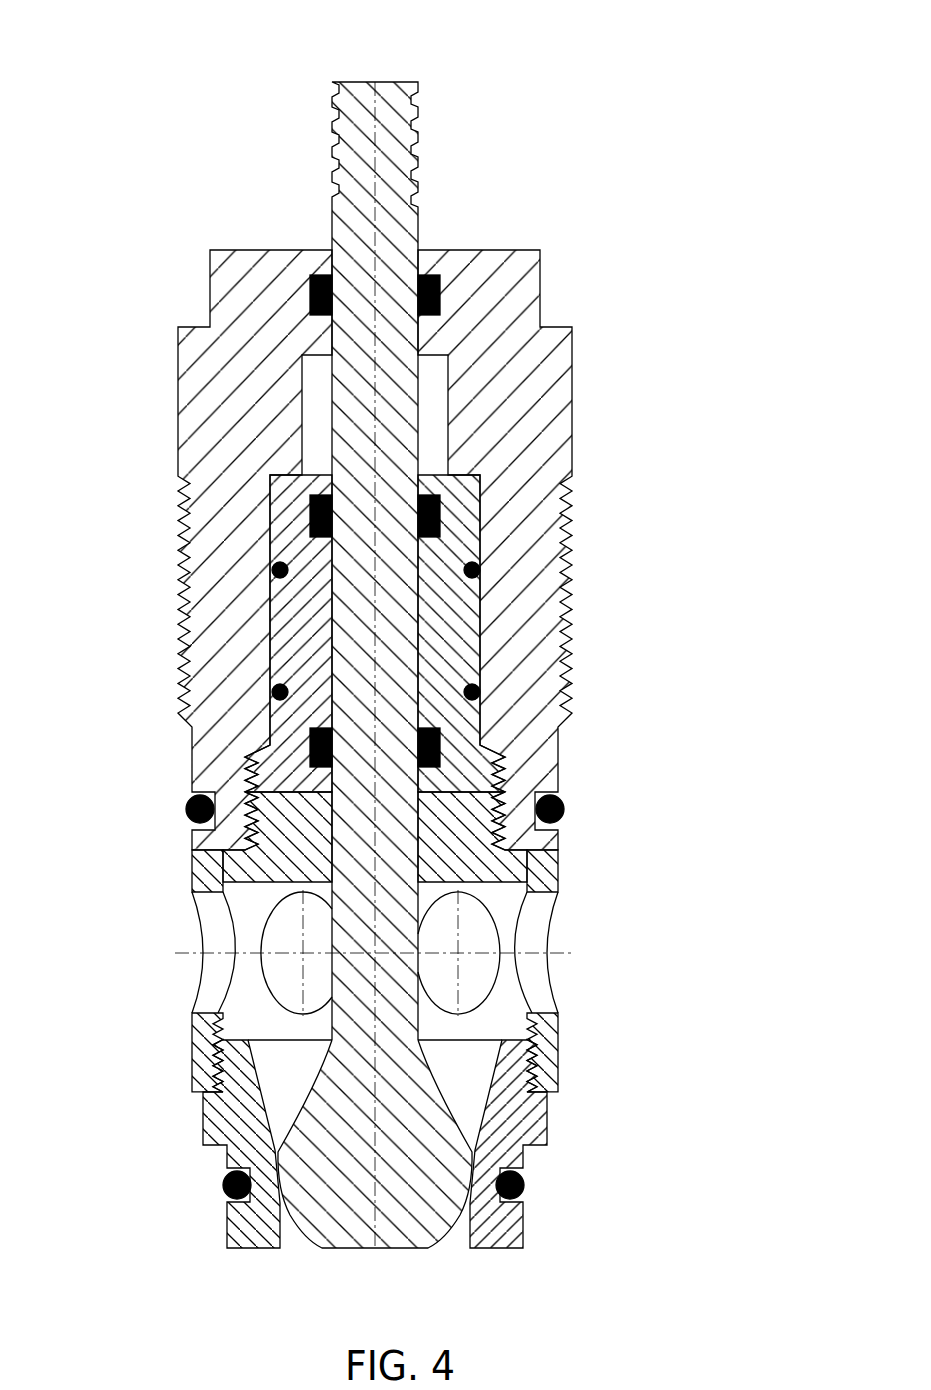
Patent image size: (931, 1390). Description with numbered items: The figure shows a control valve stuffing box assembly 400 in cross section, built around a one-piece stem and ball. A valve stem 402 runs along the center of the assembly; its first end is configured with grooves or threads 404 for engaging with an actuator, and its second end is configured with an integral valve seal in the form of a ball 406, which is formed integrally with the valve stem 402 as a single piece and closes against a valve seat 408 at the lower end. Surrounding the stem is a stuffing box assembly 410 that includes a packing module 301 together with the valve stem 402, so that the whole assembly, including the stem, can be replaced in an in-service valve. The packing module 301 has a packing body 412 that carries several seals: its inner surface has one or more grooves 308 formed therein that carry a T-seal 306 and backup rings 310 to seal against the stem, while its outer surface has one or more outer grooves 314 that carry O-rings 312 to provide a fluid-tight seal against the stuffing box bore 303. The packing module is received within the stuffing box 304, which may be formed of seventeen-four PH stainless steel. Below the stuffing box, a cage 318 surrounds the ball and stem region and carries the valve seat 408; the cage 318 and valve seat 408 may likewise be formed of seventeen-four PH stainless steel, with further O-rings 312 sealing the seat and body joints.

The stuffing box assembly 400 is at (411, 633).
The valve stem 402 is at (477, 556).
The grooves or threads 404 is at (328, 136).
The ball 406 is at (340, 1152).
The valve seat 408 is at (552, 1120).
The stuffing box assembly 410 is at (411, 535).
The packing body 412 is at (276, 612).
The packing module 301 is at (422, 633).
The stuffing box bore 303 is at (285, 518).
The stuffing box 304 is at (580, 360).
The T-seal 306 is at (447, 748).
The grooves 308 is at (429, 490).
The backup rings 310 is at (318, 492).
The O-rings 312 is at (484, 568).
The outer grooves 314 is at (480, 556).
The cage 318 is at (560, 1015).